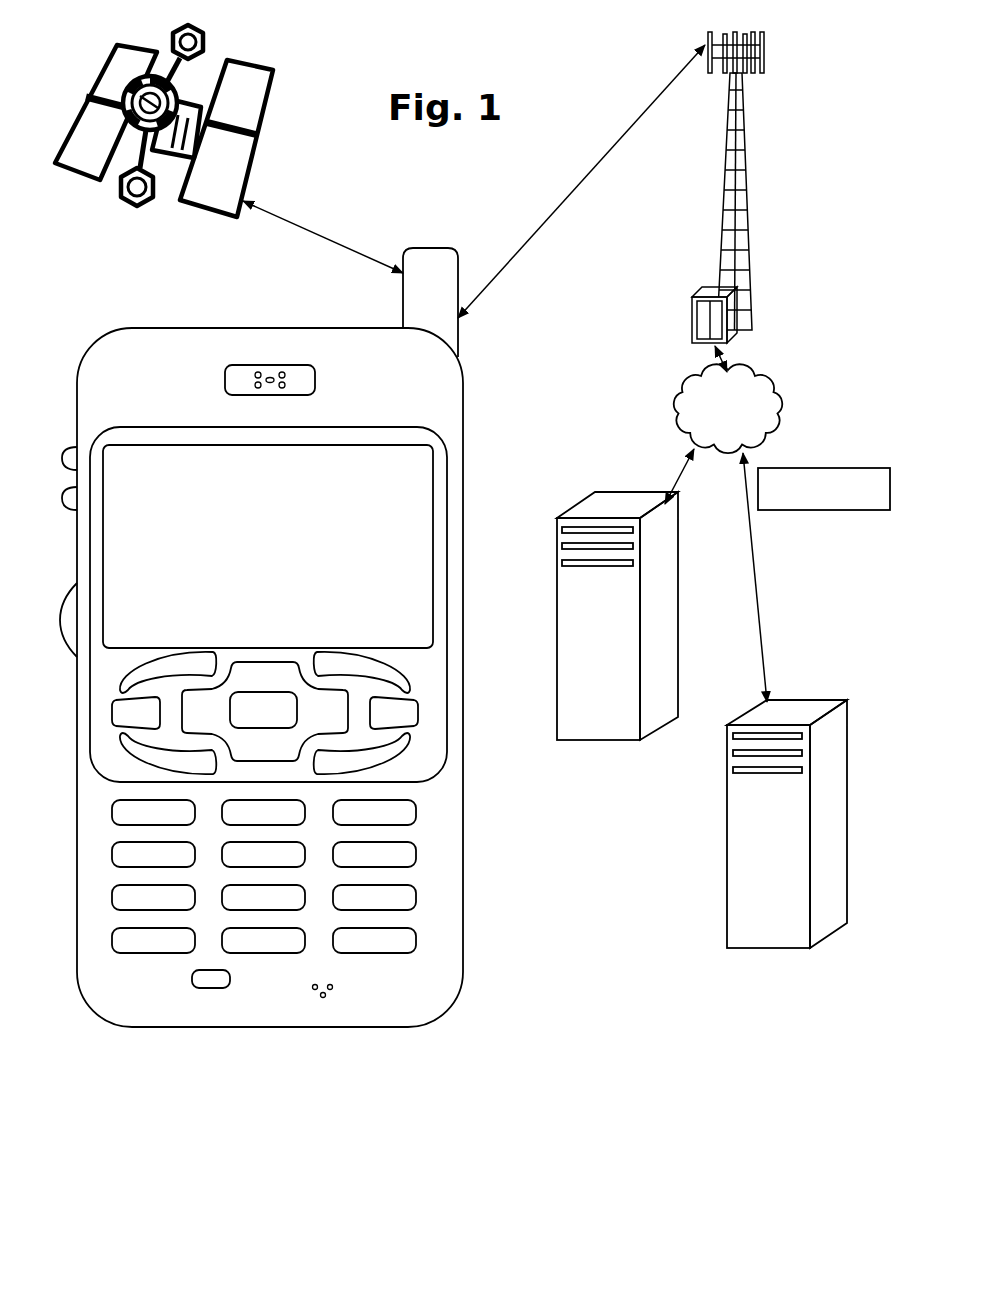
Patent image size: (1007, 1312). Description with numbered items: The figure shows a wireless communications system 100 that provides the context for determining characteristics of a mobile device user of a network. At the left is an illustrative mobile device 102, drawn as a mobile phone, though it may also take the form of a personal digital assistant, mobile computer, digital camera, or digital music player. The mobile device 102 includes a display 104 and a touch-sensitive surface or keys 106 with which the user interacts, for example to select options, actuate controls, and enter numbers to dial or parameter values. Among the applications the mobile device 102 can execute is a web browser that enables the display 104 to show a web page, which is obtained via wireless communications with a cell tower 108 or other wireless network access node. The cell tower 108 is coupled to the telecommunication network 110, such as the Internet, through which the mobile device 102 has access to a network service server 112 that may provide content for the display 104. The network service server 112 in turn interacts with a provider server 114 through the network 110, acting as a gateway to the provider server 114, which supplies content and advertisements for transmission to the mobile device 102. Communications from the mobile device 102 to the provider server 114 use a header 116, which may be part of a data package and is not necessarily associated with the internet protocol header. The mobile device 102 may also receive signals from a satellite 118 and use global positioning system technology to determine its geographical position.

The wireless communications system 100 is at (439, 61).
The mobile device 102 is at (114, 1119).
The display 104 is at (430, 423).
The keys 106 is at (468, 652).
The cell tower 108 is at (723, 203).
The telecommunication network 110 is at (680, 430).
The network service server 112 is at (572, 741).
The provider server 114 is at (758, 949).
The header 116 is at (752, 524).
The satellite 118 is at (247, 183).